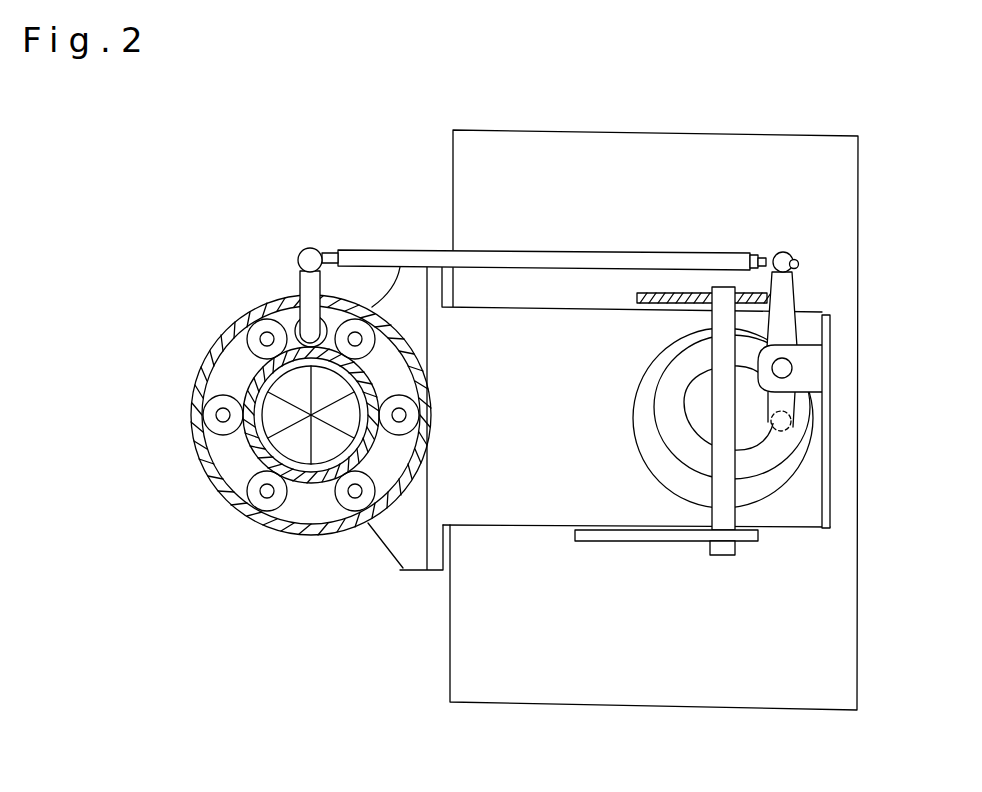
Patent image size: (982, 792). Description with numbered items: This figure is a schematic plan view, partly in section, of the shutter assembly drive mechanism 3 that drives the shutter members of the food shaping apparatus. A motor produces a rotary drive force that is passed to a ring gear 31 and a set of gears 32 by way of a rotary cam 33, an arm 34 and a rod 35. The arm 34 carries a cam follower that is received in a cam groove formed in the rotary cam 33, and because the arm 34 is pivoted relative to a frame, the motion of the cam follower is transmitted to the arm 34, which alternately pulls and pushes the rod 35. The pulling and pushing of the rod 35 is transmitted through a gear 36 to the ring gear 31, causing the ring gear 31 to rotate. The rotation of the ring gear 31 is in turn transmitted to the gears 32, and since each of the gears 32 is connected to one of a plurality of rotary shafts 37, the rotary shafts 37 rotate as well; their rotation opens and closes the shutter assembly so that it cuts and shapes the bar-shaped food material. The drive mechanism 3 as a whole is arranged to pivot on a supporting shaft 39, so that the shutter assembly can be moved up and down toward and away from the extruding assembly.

The shutter assembly drive mechanism 3 is at (192, 465).
The ring gear 31 is at (247, 375).
The gears 32 is at (200, 372).
The rotary cam 33 is at (785, 478).
The arm 34 is at (785, 303).
The rod 35 is at (650, 258).
The gear 36 is at (283, 298).
The rotary shafts 37 is at (267, 493).
The supporting shaft 39 is at (723, 557).